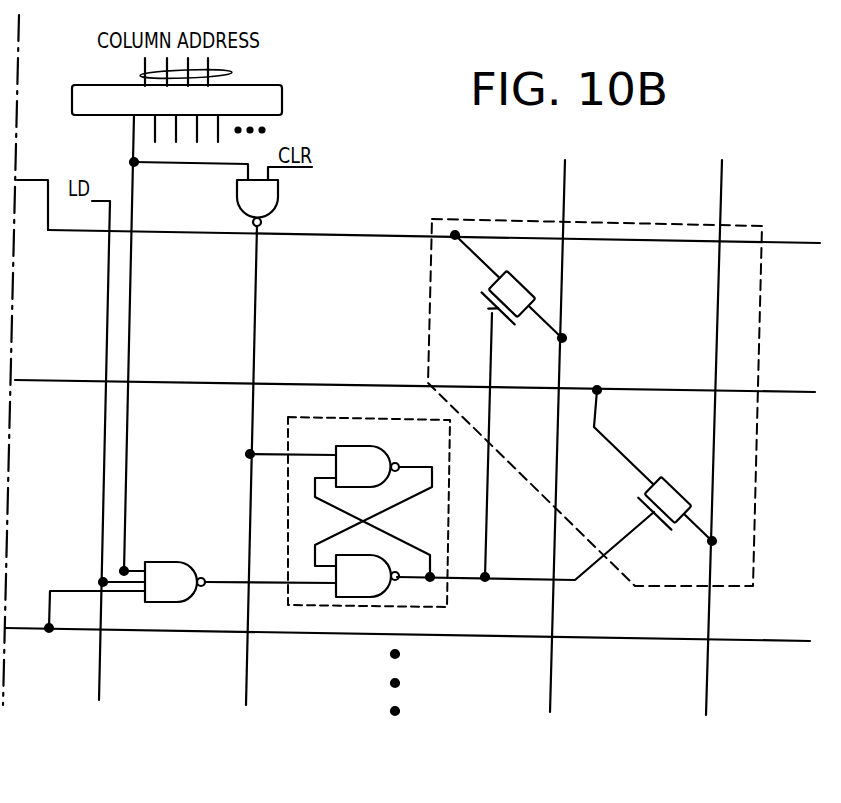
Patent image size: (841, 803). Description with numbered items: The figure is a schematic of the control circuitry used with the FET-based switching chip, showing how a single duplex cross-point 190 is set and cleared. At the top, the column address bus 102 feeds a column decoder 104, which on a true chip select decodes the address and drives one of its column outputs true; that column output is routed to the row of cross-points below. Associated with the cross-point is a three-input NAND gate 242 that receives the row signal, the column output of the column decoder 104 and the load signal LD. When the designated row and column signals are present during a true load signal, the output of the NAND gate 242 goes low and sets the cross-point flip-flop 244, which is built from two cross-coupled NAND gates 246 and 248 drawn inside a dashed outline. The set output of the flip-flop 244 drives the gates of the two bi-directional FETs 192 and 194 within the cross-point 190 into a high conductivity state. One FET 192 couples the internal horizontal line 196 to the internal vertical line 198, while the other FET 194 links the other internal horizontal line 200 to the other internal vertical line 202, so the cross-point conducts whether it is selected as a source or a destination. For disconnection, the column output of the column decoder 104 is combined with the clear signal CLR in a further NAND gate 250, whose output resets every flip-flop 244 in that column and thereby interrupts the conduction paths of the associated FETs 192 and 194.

The column address bus 102 is at (201, 72).
The column decoder 104 is at (280, 86).
The cross-point 190 is at (757, 362).
The FET 192 is at (534, 293).
The FET 194 is at (665, 478).
The internal horizontal line 196 is at (790, 240).
The internal vertical line 198 is at (568, 197).
The internal horizontal line 200 is at (785, 390).
The internal vertical line 202 is at (722, 197).
The three-input NAND gate 242 is at (217, 582).
The cross-point flip-flop 244 is at (348, 538).
The NAND gate 246 is at (339, 506).
The NAND gate 248 is at (363, 607).
The NAND gate 250 is at (280, 205).